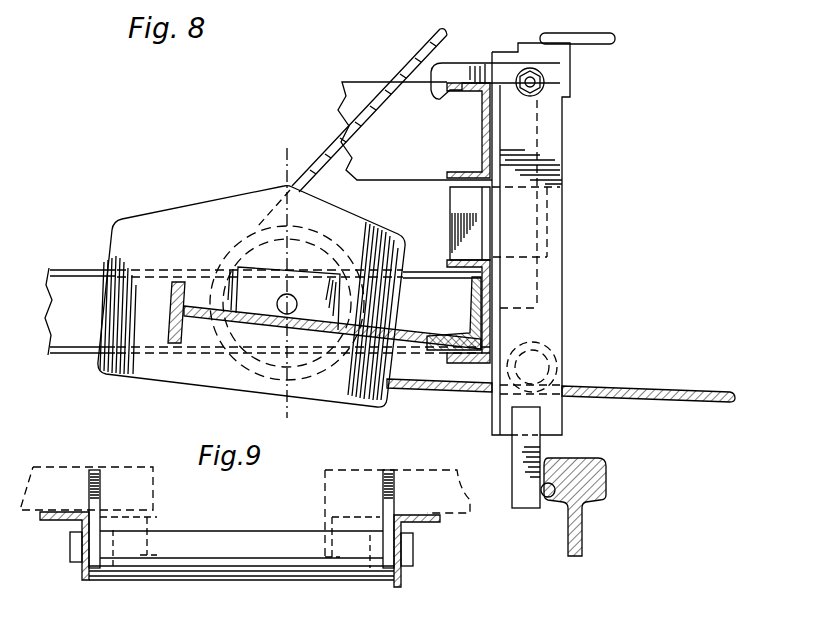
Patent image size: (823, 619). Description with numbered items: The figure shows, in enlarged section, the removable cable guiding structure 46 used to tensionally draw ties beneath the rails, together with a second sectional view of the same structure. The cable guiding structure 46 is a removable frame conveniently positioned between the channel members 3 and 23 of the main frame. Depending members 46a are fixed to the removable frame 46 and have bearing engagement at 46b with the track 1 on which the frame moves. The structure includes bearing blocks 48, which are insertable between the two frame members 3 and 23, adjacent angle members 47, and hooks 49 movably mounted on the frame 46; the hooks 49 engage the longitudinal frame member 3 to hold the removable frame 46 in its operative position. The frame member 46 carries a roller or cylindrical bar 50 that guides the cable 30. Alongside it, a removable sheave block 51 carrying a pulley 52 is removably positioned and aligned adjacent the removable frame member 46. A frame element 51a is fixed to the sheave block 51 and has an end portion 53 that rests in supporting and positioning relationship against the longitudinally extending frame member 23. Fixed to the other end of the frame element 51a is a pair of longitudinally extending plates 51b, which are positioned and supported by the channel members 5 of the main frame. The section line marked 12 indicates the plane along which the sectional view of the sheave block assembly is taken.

In FIG. 8, the track 1 is at (604, 491).
In FIG. 8, the channel member 3 is at (482, 123).
In FIG. 9, the channel member 3 is at (50, 468).
In FIG. 8, the channel member 5 is at (76, 333).
In FIG. 8, the section line 12 is at (260, 147).
In FIG. 8, the channel member 23 is at (470, 283).
In FIG. 8, the cable 30 is at (695, 393).
In FIG. 8, the removable cable guiding structure 46 is at (565, 233).
In FIG. 9, the removable cable guiding structure 46 is at (80, 582).
In FIG. 8, the depending member 46a is at (533, 449).
In FIG. 9, the depending member 46a is at (72, 555).
In FIG. 8, the bearing engagement 46b is at (551, 500).
In FIG. 8, the angle member 47 is at (537, 285).
In FIG. 9, the angle member 47 is at (157, 517).
In FIG. 8, the bearing block 48 is at (450, 200).
In FIG. 9, the bearing block 48 is at (93, 470).
In FIG. 8, the hook 49 is at (463, 62).
In FIG. 8, the roller or cylindrical bar 50 is at (556, 356).
In FIG. 9, the roller or cylindrical bar 50 is at (250, 580).
In FIG. 8, the removable sheave block 51 is at (206, 216).
In FIG. 8, the frame element 51a is at (407, 346).
In FIG. 8, the longitudinally extending plate 51b is at (171, 305).
In FIG. 8, the pulley 52 is at (338, 232).
In FIG. 8, the end portion 53 is at (470, 313).